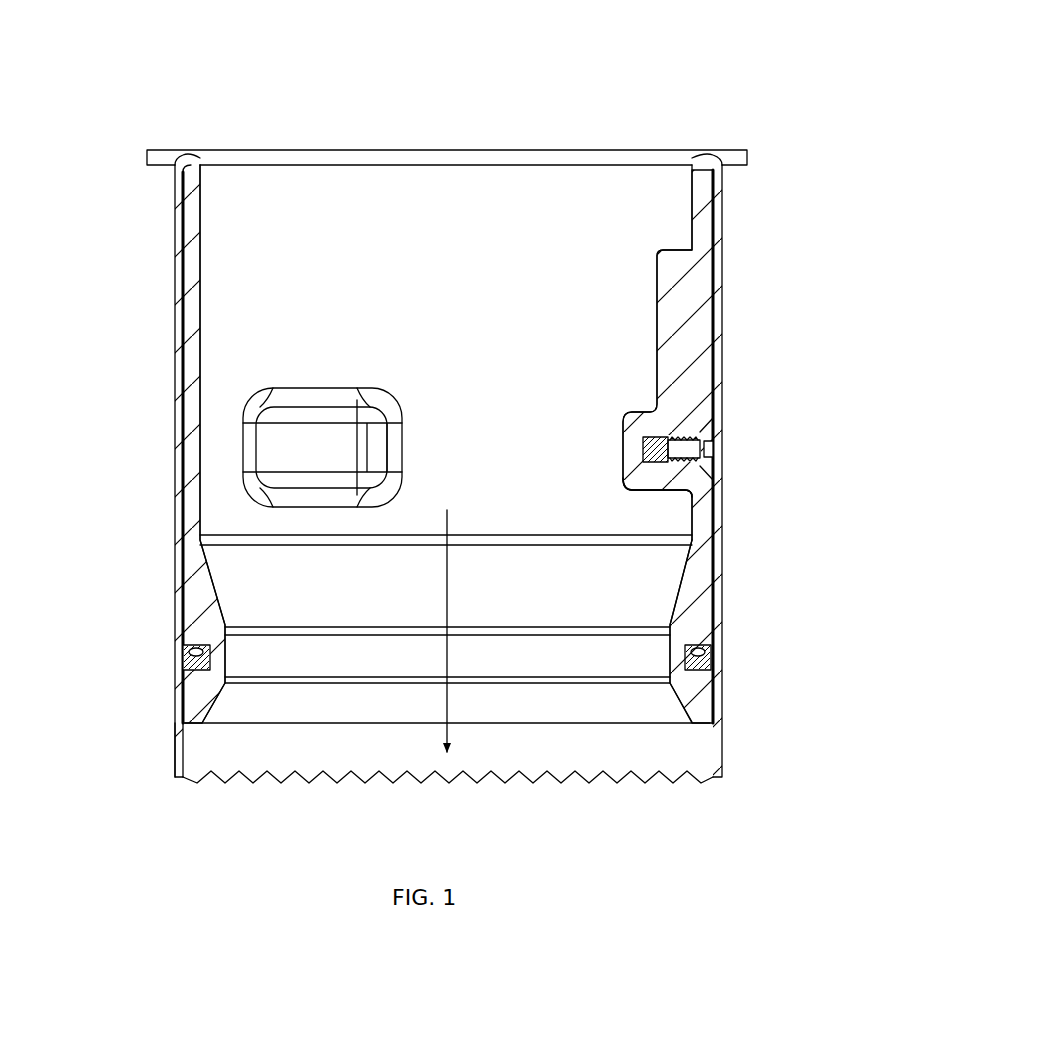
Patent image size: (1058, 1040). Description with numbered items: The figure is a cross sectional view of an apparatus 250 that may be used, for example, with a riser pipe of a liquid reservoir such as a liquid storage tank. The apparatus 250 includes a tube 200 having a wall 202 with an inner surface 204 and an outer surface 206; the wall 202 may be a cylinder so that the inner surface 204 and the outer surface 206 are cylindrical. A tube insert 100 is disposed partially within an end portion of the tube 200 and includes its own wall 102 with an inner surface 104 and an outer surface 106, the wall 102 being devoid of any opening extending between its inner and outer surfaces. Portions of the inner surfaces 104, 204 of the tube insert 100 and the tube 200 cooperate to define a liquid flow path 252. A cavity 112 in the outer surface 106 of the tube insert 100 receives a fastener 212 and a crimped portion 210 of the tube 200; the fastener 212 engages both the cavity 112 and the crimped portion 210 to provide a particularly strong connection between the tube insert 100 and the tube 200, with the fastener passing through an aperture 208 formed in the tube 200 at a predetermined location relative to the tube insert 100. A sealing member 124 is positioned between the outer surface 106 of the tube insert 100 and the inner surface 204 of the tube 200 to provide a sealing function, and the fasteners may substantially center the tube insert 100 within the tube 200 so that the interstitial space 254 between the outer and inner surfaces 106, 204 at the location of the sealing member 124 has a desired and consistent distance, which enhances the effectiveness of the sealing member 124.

The tube insert 100 is at (232, 130).
The wall 102 is at (194, 213).
The inner surface 104 is at (207, 294).
The outer surface 106 is at (175, 327).
The cavity 112 is at (645, 452).
The sealing member 124 is at (711, 662).
The tube 200 is at (735, 292).
The wall 202 is at (176, 720).
The inner surface 204 is at (188, 750).
The outer surface 206 is at (172, 760).
The aperture 208 is at (688, 466).
The crimped portion 210 is at (710, 423).
The fastener 212 is at (709, 449).
The apparatus 250 is at (842, 108).
The liquid flow path 252 is at (448, 521).
The interstitial space 254 is at (176, 531).